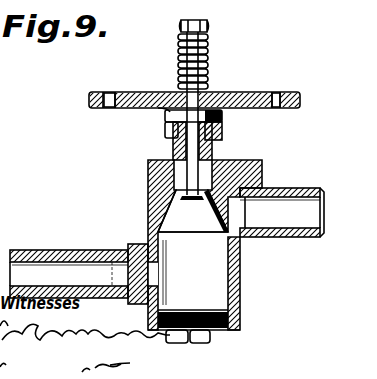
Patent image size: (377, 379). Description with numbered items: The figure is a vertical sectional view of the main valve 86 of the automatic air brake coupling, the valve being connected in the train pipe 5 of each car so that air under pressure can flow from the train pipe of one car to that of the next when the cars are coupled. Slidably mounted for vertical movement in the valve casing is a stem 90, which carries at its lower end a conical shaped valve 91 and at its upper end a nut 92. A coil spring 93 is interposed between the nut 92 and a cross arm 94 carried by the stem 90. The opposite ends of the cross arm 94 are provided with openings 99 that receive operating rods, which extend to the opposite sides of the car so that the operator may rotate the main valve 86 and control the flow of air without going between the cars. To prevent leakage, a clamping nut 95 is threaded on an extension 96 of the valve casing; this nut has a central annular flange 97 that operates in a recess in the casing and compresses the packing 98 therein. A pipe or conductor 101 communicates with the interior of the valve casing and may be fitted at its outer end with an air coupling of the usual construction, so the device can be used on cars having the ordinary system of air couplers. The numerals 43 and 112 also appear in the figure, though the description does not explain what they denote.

The train pipe 5 is at (64, 253).
The pipe 43 is at (364, 133).
The main valve 86 is at (178, 150).
The stem 90 is at (196, 100).
The conical shaped valve 91 is at (155, 208).
The nut 92 is at (198, 19).
The coil spring 93 is at (202, 62).
The cross arm 94 is at (158, 84).
The clamping nut 95 is at (222, 131).
The extension 96 is at (213, 151).
The central annular flange 97 is at (172, 134).
The packing 98 is at (242, 168).
The openings 99 is at (277, 97).
The pipe or conductor 101 is at (314, 190).
The pipe 112 is at (276, 8).